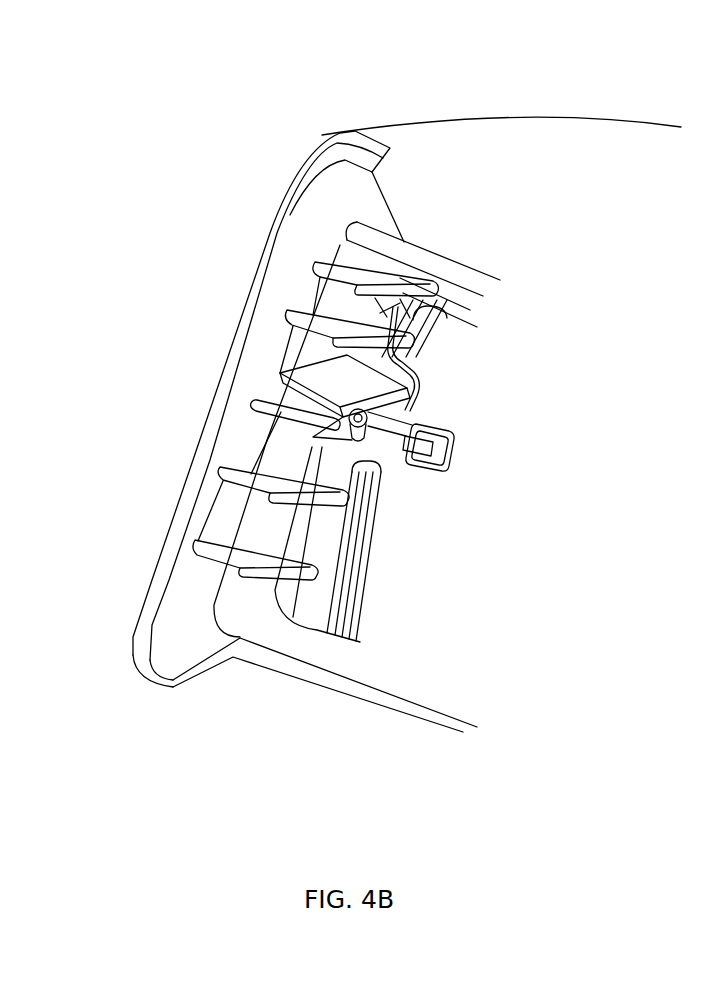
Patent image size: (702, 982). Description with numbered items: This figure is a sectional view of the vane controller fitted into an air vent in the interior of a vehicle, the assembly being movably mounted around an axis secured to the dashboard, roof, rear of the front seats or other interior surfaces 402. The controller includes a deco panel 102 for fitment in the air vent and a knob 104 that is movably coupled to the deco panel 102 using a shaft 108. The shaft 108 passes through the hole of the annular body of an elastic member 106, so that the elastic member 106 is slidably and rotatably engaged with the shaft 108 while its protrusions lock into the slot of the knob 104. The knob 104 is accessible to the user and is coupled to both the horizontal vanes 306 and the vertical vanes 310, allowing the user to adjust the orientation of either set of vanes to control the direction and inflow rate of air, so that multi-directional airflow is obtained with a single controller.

The interior surfaces 402 is at (285, 300).
The deco panel 102 is at (347, 385).
The knob 104 is at (270, 404).
The horizontal vanes 306 is at (237, 468).
The shaft 108 is at (367, 422).
The elastic member 106 is at (408, 415).
The vertical vanes 310 is at (375, 540).